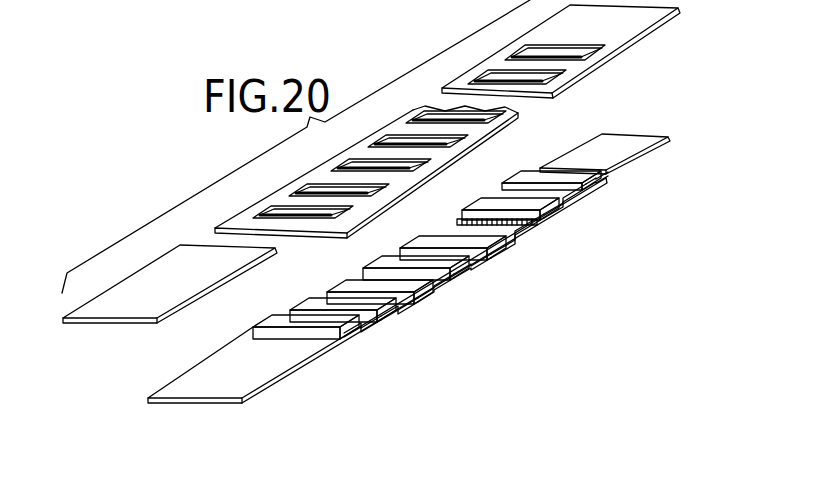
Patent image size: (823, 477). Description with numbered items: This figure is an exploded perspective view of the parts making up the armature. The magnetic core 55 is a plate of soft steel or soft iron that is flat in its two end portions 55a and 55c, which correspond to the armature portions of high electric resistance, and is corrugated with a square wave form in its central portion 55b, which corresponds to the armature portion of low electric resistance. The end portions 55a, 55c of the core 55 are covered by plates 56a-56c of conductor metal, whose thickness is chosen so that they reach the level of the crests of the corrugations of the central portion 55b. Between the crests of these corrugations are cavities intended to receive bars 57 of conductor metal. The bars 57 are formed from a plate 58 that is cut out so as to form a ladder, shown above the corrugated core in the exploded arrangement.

The core 55 is at (422, 268).
The end portion 55a is at (203, 385).
The central portion 55b is at (468, 255).
The end portion 55c is at (615, 155).
The plates of conductor metal 56a-56c is at (118, 300).
The bars of conductor metal 57 is at (367, 153).
The plate 58 is at (366, 172).